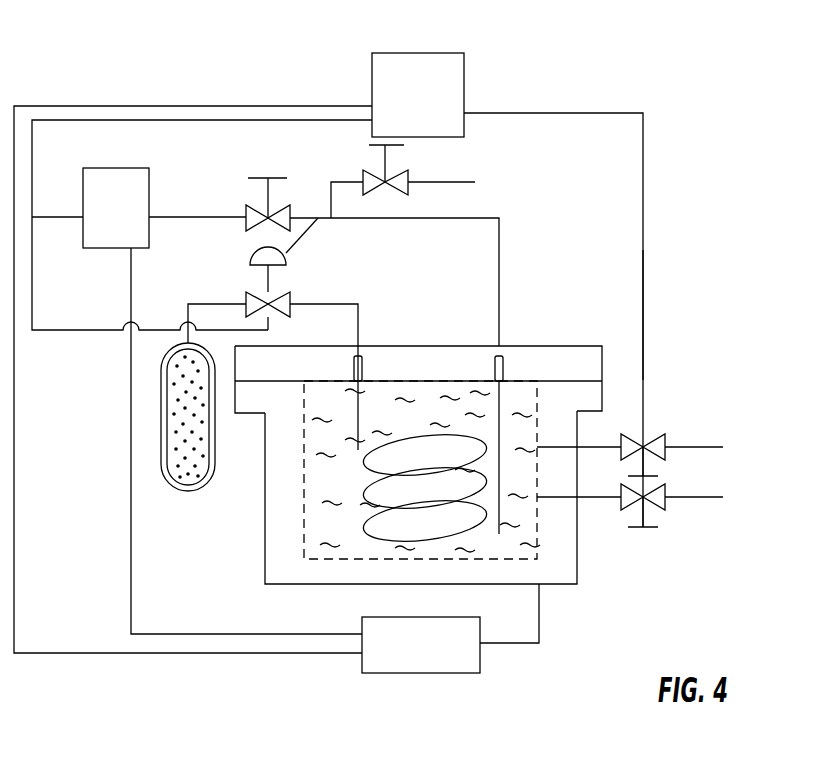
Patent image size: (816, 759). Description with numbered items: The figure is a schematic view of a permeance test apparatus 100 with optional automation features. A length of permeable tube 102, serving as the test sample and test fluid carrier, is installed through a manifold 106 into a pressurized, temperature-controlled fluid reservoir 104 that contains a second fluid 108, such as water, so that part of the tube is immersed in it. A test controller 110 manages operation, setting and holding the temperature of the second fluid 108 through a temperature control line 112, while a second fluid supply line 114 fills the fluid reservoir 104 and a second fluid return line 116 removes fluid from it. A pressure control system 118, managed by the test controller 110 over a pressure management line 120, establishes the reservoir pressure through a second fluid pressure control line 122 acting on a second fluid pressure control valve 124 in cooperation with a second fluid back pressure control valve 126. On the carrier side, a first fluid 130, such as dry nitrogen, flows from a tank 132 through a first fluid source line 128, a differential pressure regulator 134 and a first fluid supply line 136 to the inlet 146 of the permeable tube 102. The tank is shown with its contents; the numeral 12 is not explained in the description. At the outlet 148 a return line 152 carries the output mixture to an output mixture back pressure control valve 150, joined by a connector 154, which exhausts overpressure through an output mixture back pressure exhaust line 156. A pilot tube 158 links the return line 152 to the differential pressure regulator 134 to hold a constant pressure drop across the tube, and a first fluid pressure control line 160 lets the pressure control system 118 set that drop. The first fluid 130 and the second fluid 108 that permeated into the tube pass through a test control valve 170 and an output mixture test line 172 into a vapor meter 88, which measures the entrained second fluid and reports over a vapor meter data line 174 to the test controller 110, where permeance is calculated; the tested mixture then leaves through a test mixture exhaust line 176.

The permeance test apparatus 100 is at (736, 176).
The gas storage cylinder 12 is at (172, 438).
The vapor meter 88 is at (149, 188).
The permeable tube 102 is at (372, 410).
The fluid reservoir 104 is at (578, 565).
The manifold 106 is at (538, 346).
The second fluid 108 is at (313, 497).
The test controller 110 is at (455, 674).
The temperature control line 112 is at (541, 640).
The second fluid supply line 114 is at (708, 446).
The second fluid return line 116 is at (715, 498).
The pressure control system 118 is at (418, 53).
The pressure management line 120 is at (199, 106).
The second fluid pressure control line 122 is at (644, 308).
The second fluid pressure control valve 124 is at (660, 433).
The second fluid back pressure control valve 126 is at (666, 503).
The first fluid source line 128 is at (200, 303).
The first fluid 130 is at (200, 452).
The tank 132 is at (165, 480).
The differential pressure regulator 134 is at (246, 300).
The first fluid supply line 136 is at (340, 304).
The inlet 146 is at (360, 392).
The outlet 148 is at (500, 393).
The output mixture back pressure control valve 150 is at (362, 177).
The return line 152 is at (500, 250).
The connector 154 is at (329, 192).
The output mixture back pressure exhaust line 156 is at (437, 182).
The pilot tube 158 is at (300, 238).
The first fluid pressure control line 160 is at (122, 120).
The test control valve 170 is at (247, 212).
The output mixture test line 172 is at (176, 217).
The vapor meter data line 174 is at (128, 306).
The test mixture exhaust line 176 is at (70, 217).